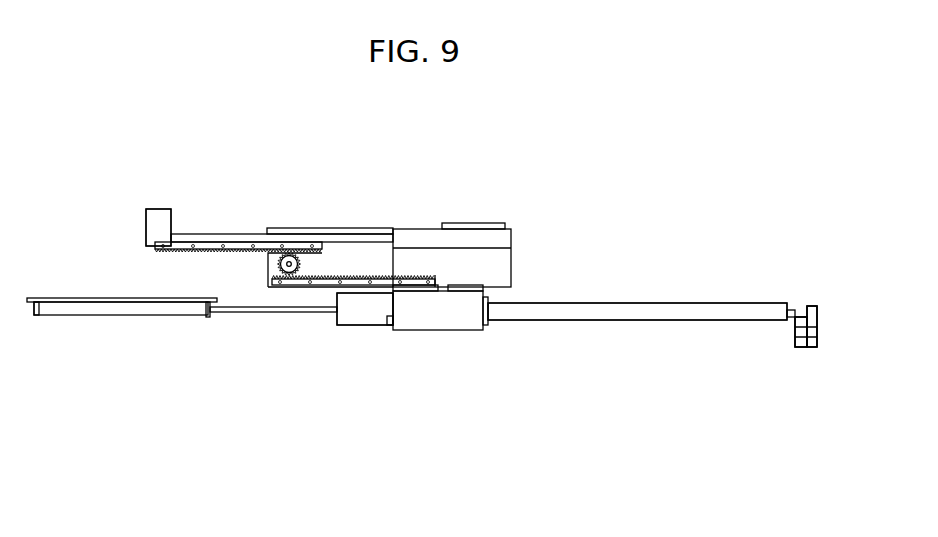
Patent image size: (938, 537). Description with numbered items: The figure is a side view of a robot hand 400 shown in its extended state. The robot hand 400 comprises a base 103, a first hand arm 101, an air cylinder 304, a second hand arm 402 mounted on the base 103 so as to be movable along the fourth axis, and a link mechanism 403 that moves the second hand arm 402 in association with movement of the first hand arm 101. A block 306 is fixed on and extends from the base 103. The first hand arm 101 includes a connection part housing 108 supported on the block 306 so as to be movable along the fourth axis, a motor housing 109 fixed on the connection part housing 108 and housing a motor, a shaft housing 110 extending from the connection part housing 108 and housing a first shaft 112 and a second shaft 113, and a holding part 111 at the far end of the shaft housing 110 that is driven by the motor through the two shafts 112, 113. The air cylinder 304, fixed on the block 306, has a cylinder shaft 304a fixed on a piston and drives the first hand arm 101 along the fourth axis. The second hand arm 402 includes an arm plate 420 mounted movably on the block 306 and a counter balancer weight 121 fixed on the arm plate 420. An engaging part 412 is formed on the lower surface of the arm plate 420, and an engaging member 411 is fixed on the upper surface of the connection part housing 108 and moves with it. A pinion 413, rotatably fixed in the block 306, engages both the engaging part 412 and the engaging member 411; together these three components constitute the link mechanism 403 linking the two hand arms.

The second hand arm 402 is at (138, 249).
The counter balancer weight 121 is at (160, 209).
The arm plate 420 is at (207, 242).
The link mechanism 403 is at (377, 140).
The engaging part 412 is at (258, 252).
The pinion 413 is at (292, 253).
The engaging member 411 is at (338, 275).
The block 306 is at (511, 266).
The base 103 is at (480, 223).
The air cylinder 304 is at (100, 317).
The cylinder shaft 304a is at (258, 313).
The motor housing 109 is at (363, 310).
The connection part housing 108 is at (440, 310).
The first hand arm 101 is at (587, 324).
The shaft housing 110 is at (693, 312).
The first shaft 112 is at (801, 308).
The second shaft 113 is at (806, 326).
The holding part 111 is at (804, 362).
The robot hand 400 is at (306, 422).